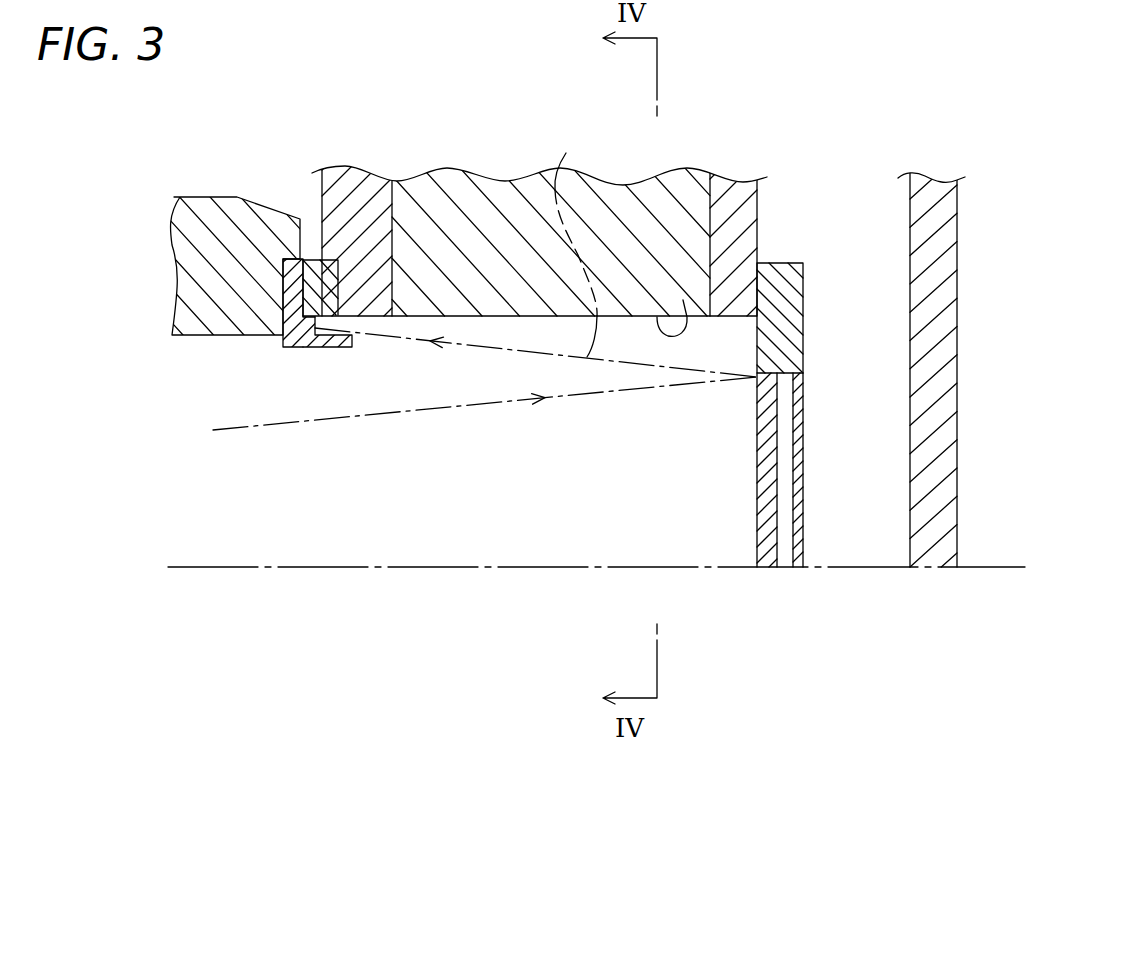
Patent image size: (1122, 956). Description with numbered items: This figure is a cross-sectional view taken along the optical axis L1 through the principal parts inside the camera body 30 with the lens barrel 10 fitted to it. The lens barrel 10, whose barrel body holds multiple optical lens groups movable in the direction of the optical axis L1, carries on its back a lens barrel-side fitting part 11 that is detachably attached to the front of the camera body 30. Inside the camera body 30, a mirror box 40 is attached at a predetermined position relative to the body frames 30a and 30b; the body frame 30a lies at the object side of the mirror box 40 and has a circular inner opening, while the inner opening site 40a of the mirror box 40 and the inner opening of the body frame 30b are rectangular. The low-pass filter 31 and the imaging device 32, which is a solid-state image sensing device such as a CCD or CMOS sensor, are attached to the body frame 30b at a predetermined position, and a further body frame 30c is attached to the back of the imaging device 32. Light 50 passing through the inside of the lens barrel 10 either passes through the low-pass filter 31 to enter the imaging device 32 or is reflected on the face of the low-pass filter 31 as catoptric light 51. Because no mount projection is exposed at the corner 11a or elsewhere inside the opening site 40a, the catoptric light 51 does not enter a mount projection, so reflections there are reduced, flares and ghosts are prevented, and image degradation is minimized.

The lens barrel 10 is at (214, 213).
The lens barrel-side fitting part 11 is at (303, 227).
The corner of the opening site 11a is at (353, 337).
The camera body 30 is at (520, 157).
The body frame 30a is at (350, 180).
The body frame 30b is at (727, 200).
The body frame 30c is at (943, 330).
The low-pass filter 31 is at (771, 567).
The imaging device 32 is at (798, 567).
The mirror box 40 is at (487, 180).
The inner opening site 40a is at (683, 300).
The light 50 is at (300, 423).
The catoptric light 51 is at (574, 242).
The optical axis L1 is at (410, 567).